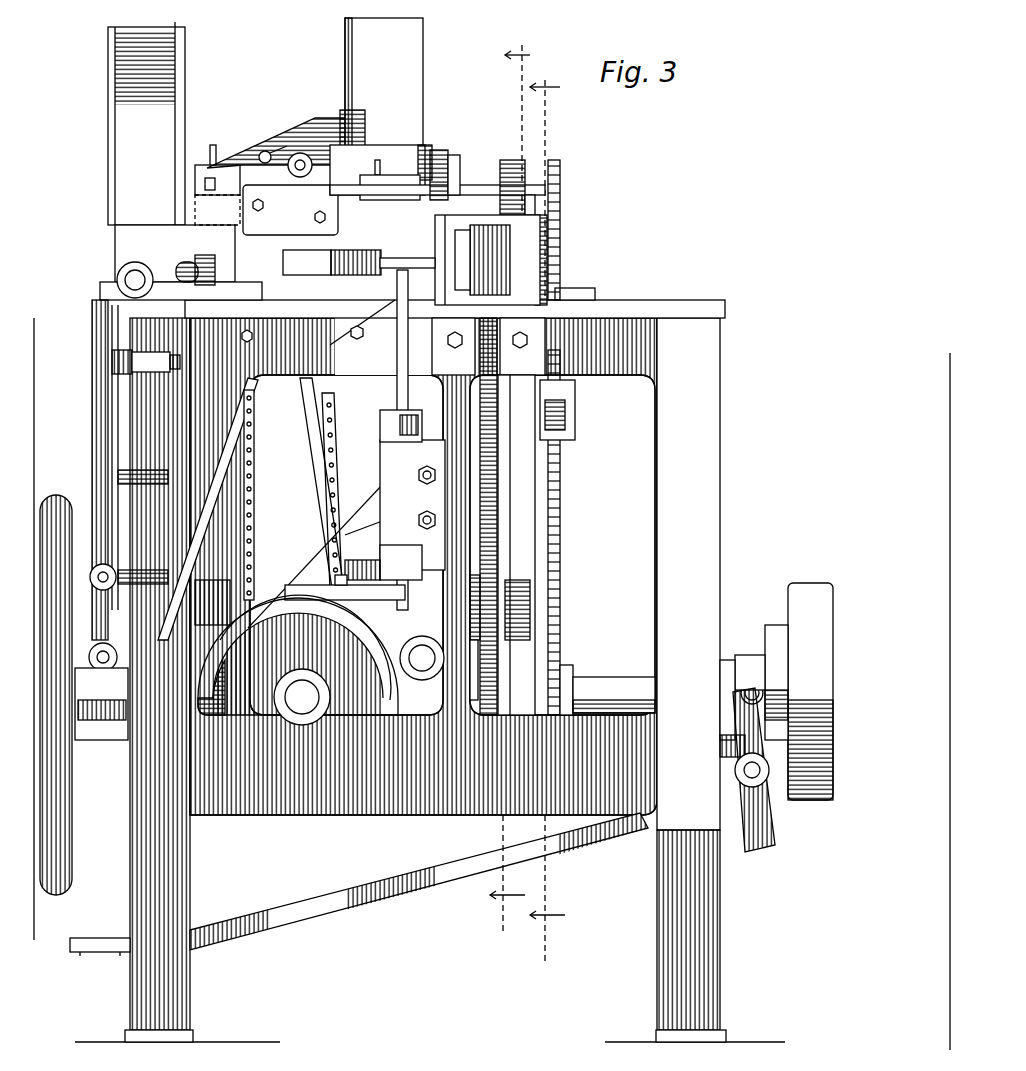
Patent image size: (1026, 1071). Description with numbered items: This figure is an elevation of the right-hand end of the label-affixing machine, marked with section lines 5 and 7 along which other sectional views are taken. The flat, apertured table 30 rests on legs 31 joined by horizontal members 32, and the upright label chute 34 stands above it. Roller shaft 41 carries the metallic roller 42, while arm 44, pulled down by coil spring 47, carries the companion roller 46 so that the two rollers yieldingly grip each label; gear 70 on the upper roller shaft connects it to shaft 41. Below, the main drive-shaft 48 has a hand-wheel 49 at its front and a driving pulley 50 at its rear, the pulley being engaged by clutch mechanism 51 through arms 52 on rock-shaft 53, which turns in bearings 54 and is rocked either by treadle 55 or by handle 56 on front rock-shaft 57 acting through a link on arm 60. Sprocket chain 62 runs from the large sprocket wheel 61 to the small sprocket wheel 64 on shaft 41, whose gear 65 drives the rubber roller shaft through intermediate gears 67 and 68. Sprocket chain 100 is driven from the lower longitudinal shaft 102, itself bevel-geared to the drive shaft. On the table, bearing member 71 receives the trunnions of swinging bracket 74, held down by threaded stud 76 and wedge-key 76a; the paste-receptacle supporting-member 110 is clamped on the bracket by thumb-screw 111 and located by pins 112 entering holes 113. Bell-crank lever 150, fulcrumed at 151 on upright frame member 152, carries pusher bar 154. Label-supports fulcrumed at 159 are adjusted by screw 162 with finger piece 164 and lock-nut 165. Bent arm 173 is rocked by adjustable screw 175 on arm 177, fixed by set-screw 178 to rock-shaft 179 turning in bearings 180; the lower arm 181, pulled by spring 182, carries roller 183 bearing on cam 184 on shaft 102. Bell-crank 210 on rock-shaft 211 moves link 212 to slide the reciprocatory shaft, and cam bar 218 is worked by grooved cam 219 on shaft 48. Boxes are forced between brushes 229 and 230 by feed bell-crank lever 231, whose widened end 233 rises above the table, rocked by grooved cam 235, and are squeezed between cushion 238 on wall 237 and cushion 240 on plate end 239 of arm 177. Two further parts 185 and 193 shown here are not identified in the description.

The section line 5— 5 is at (547, 513).
The section line 7— 7 is at (510, 483).
The table 30 is at (625, 300).
The legs 31 is at (138, 853).
The horizontal members 32 is at (360, 765).
The upright chute 34 is at (381, 96).
The roller shaft 41 is at (470, 185).
The metallic roller 42 is at (330, 200).
The arm 44 is at (445, 150).
The roller 46 is at (380, 150).
The coil contractile spring 47 is at (458, 155).
The main drive-shaft 48 is at (604, 677).
The hand-wheel 49 is at (58, 495).
The driving pulley 50 is at (805, 583).
The clutch mechanism 51 is at (752, 665).
The arms 52 is at (750, 717).
The rock-shaft 53 is at (758, 780).
The bearings 54 is at (740, 740).
The treadle 55 is at (95, 938).
The handle 56 is at (97, 400).
The front rock-shaft 57 is at (103, 671).
The arm 60 is at (758, 820).
The sprocket wheel 61 is at (566, 668).
The sprocket chain 62 is at (560, 215).
The small sprocket wheel 64 is at (556, 165).
The gear 65 is at (508, 160).
The intermediate gear 67 is at (535, 200).
The intermediate gear 68 is at (505, 235).
The gear 70 is at (425, 145).
The bearing member 71 is at (181, 262).
The bracket 74 is at (240, 214).
The screw-threaded stud 76 is at (205, 255).
The wedge-key 76a is at (185, 264).
The sprocket chain 100 is at (254, 480).
The lower longitudinal shaft 102 is at (300, 705).
The paste-receptacle supporting-member 110 is at (281, 148).
The thumb-screw 111 is at (213, 145).
The upstanding pins 112 is at (195, 170).
The holes 113 is at (205, 188).
The bell-crank lever 150 is at (335, 535).
The fulcrum 151 is at (380, 500).
The upright member 152 is at (420, 427).
The pusher bar 154 is at (390, 187).
The fulcrum 159 is at (252, 336).
The screw 162 is at (165, 372).
The finger pieces 164 is at (118, 374).
The lock-nuts 165 is at (136, 351).
The bent arm 173 is at (332, 262).
The adjustable screw 175 is at (385, 268).
The arm 177 is at (350, 332).
The set-screw 178 is at (315, 219).
The rock-shaft 179 is at (397, 352).
The bearings 180 is at (415, 420).
The arm 181 is at (325, 590).
The coil contractile spring 182 is at (342, 575).
The roller 183 is at (290, 605).
The cam 184 is at (305, 647).
The post 185 is at (183, 85).
The lever 193 is at (220, 600).
The bell-crank 210 is at (336, 448).
The rock-shaft 211 is at (422, 672).
The link 212 is at (278, 495).
The cam bar 218 is at (540, 482).
The grooved cam 219 is at (515, 580).
The brush 229 is at (535, 240).
The brush 230 is at (460, 265).
The feed bell-crank lever 231 is at (497, 420).
The widened end 233 is at (490, 260).
The grooved cam 235 is at (474, 700).
The flange 237 is at (580, 300).
The yielding cushion 238 is at (547, 268).
The plate end 239 is at (435, 322).
The cushion 240 is at (488, 346).